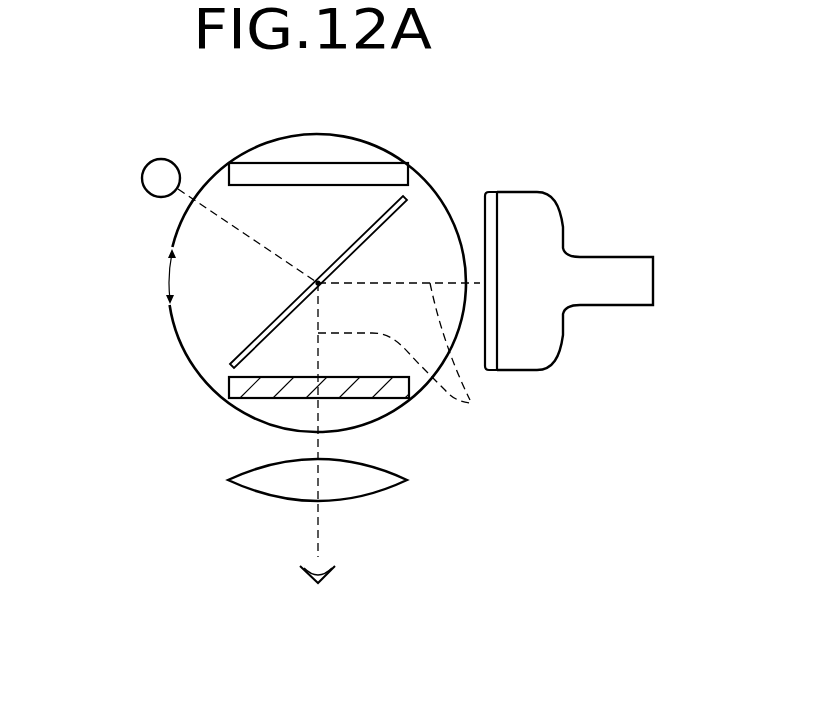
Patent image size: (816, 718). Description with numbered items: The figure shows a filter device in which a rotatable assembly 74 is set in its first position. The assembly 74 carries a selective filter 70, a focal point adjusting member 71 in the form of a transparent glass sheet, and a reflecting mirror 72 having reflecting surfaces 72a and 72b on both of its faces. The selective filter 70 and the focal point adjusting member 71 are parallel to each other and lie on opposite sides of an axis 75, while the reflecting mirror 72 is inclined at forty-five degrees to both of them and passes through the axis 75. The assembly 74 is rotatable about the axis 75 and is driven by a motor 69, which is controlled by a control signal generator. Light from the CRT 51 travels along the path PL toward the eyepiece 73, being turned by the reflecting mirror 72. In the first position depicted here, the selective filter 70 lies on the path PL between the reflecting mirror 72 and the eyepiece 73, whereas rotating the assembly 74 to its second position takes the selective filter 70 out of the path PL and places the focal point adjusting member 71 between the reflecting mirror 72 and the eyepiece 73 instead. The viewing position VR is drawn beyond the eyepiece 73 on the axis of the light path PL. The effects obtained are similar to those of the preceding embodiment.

The CRT 51 is at (565, 238).
The motor 69 is at (149, 163).
The selective filter 70 is at (332, 377).
The focal point adjusting member 71 is at (392, 162).
The reflecting mirror 72 is at (334, 259).
The reflecting surface 72a is at (384, 223).
The reflecting surface 72b is at (356, 240).
The eyepiece 73 is at (247, 472).
The assembly 74 is at (143, 235).
The axis 75 is at (321, 286).
The path of light PL is at (347, 373).
The viewer's eye VR is at (323, 577).